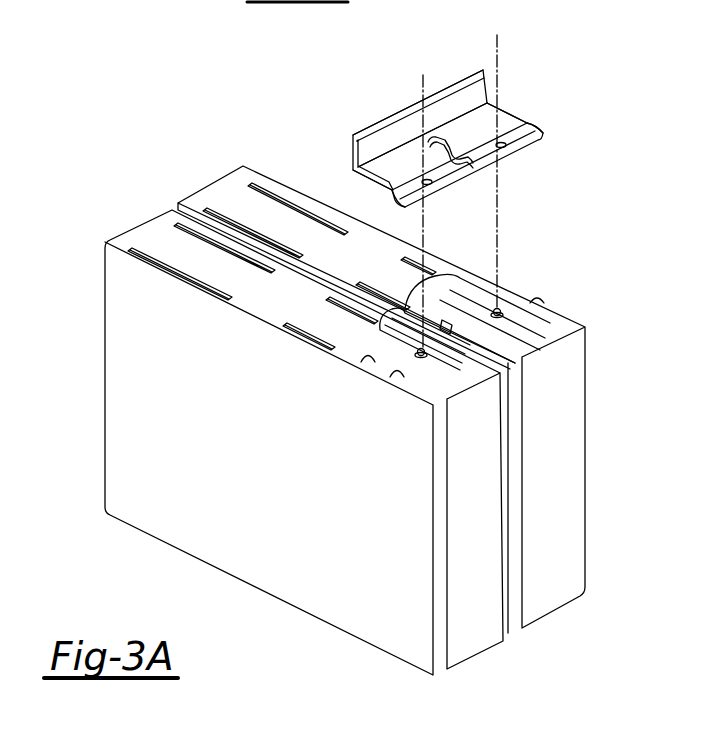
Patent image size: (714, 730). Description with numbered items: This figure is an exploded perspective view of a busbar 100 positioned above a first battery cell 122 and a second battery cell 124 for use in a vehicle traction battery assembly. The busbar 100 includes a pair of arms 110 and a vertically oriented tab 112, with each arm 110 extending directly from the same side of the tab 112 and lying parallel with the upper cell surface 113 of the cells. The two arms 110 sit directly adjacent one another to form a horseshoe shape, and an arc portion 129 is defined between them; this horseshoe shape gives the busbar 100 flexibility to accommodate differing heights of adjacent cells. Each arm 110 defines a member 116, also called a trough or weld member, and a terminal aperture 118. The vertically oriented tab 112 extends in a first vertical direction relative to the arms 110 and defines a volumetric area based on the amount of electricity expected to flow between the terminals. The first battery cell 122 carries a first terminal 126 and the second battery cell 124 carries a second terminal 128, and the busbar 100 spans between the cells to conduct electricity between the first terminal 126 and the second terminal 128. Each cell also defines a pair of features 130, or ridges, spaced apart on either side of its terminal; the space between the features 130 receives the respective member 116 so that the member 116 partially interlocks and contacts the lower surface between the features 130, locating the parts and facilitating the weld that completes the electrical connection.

The busbar 100 is at (463, 26).
The arms 110 is at (442, 116).
The vertically oriented tab 112 is at (438, 133).
The upper cell surface 113 is at (364, 275).
The member 116 is at (438, 145).
The terminal aperture 118 is at (492, 176).
The first battery cell 122 is at (326, 452).
The second battery cell 124 is at (400, 408).
The first terminal 126 is at (417, 339).
The second terminal 128 is at (477, 302).
The arc portion 129 is at (427, 124).
The features 130 is at (427, 313).